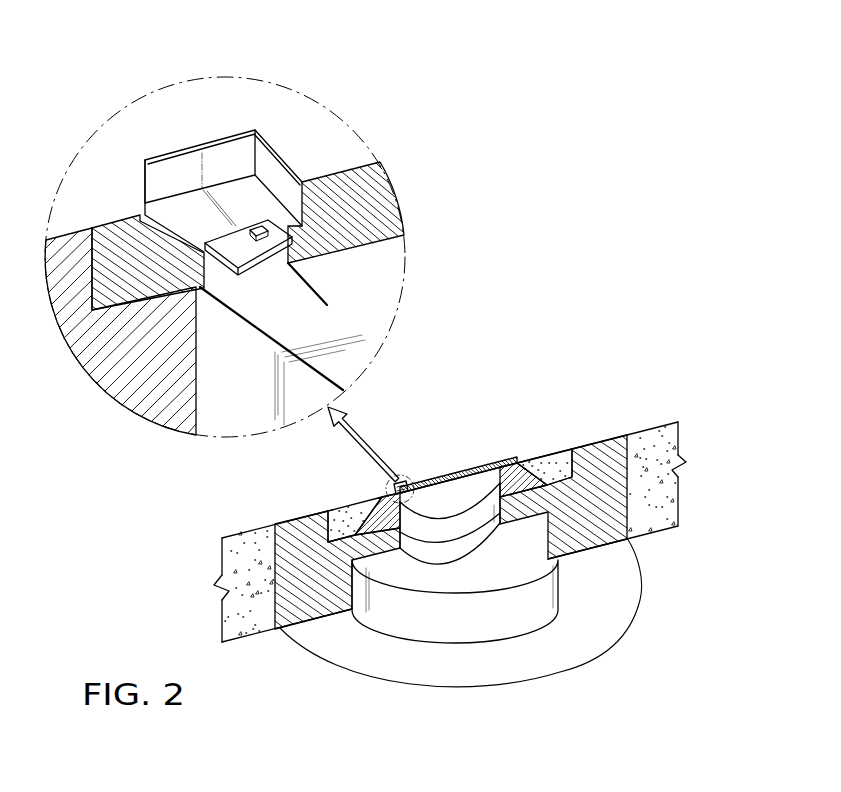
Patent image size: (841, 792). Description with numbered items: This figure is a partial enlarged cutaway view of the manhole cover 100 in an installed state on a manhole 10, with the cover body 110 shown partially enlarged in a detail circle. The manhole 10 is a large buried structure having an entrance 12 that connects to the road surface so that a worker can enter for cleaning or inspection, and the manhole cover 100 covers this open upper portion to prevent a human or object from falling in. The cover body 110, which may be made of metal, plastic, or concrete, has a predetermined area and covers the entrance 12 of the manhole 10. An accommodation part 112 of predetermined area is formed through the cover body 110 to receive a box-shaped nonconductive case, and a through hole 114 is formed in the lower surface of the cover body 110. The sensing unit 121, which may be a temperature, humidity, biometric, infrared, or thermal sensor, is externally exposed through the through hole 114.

The manhole 10 is at (315, 603).
The entrance 12 is at (423, 525).
The manhole cover 100 is at (468, 474).
The cover body 110 is at (380, 202).
The accommodation part 112 is at (293, 198).
The through hole 114 is at (308, 292).
The sensing unit 121 is at (256, 242).